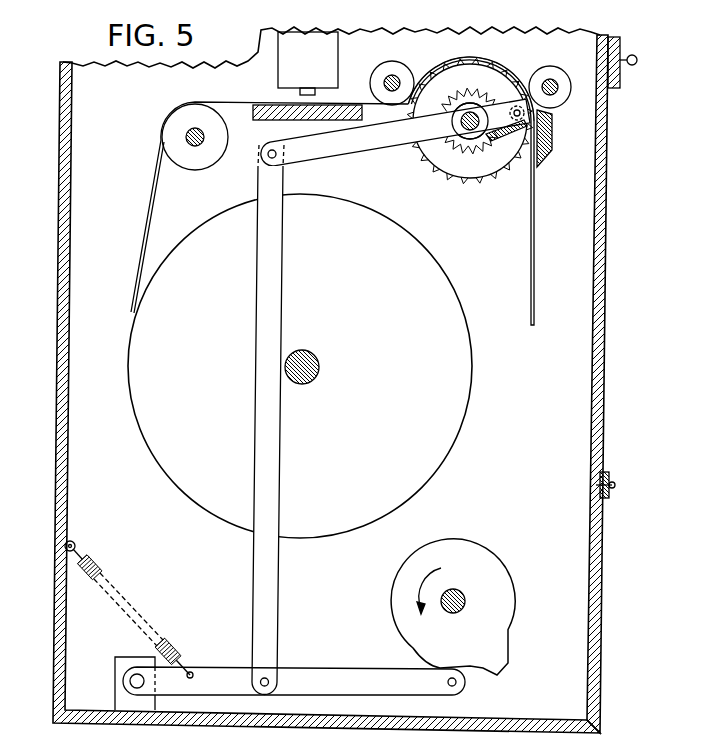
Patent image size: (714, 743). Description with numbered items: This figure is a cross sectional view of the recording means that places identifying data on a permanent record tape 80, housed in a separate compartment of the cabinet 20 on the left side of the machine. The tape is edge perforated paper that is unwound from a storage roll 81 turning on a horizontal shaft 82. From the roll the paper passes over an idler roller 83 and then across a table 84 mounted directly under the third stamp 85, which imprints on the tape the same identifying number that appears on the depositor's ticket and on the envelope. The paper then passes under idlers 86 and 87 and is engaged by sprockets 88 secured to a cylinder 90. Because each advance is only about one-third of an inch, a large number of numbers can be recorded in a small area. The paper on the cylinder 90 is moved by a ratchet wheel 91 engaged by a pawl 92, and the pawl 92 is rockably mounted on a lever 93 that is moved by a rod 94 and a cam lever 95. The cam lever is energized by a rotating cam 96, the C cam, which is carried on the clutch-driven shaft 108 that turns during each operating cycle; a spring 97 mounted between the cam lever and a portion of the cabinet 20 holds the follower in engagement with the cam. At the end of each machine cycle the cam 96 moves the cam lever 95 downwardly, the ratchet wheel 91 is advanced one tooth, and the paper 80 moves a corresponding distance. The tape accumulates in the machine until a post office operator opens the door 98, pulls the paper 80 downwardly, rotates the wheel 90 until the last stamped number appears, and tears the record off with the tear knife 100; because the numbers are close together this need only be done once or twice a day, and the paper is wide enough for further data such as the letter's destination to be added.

The cabinet 20 is at (61, 152).
The permanent record tape 80 is at (147, 211).
The storage roll 81 is at (467, 366).
The horizontal shaft 82 is at (315, 355).
The idler roller 83 is at (172, 120).
The table 84 is at (270, 120).
The third stamp 85 is at (336, 59).
The idler 86 is at (400, 67).
The idler 87 is at (557, 66).
The sprockets 88 is at (496, 62).
The cylinder 90 is at (462, 180).
The ratchet wheel 91 is at (465, 97).
The pawl 92 is at (497, 139).
The lever 93 is at (358, 145).
The rod 94 is at (275, 603).
The cam lever 95 is at (310, 672).
The rotating cam 96 is at (512, 587).
The spring 97 is at (176, 638).
The door 98 is at (607, 232).
The tear knife 100 is at (552, 137).
The shaft 108 is at (457, 591).